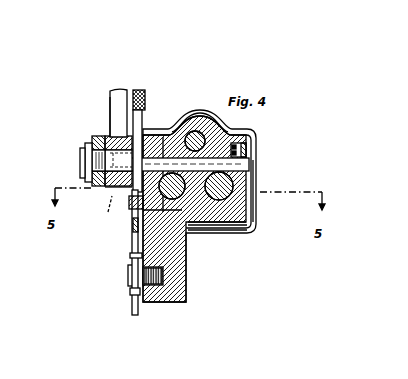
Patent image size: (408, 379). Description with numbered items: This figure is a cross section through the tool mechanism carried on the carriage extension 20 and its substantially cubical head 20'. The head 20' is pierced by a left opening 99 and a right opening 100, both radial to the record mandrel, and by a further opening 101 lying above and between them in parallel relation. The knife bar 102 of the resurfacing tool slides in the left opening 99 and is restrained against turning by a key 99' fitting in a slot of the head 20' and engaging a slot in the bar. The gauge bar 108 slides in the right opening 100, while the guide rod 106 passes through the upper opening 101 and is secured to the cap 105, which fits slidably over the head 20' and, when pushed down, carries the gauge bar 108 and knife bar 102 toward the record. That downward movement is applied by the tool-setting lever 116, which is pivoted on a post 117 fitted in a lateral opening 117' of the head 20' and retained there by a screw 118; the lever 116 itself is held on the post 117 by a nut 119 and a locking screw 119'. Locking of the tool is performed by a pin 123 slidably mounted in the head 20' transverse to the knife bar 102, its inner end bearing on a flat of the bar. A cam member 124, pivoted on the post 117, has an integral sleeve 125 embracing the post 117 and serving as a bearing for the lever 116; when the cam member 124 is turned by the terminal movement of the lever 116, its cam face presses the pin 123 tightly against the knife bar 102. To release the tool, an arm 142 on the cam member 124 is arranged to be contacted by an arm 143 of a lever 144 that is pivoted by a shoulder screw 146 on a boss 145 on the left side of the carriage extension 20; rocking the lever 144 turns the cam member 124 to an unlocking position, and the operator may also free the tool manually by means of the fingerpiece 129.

The carriage extension 20 is at (199, 206).
The head 20' is at (272, 192).
The left opening 99 is at (162, 143).
The key 99' is at (236, 251).
The right opening 100 is at (246, 174).
The opening 101 is at (195, 130).
The knife bar 102 is at (192, 225).
The cap 105 is at (251, 141).
The guide rod 106 is at (204, 131).
The gauge bar 108 is at (232, 227).
The tool-setting lever 116 is at (109, 97).
The post 117 is at (111, 206).
The lateral opening 117' is at (186, 124).
The screw 118 is at (247, 150).
The nut 119 is at (71, 146).
The locking screw 119' is at (59, 150).
The pin 123 is at (187, 250).
The cam member 124 is at (108, 134).
The sleeve 125 is at (132, 198).
The fingerpiece 129 is at (117, 99).
The arm 142 is at (133, 232).
The arm 143 is at (134, 237).
The lever 144 is at (131, 293).
The boss 145 is at (130, 255).
The shoulder screw 146 is at (128, 271).